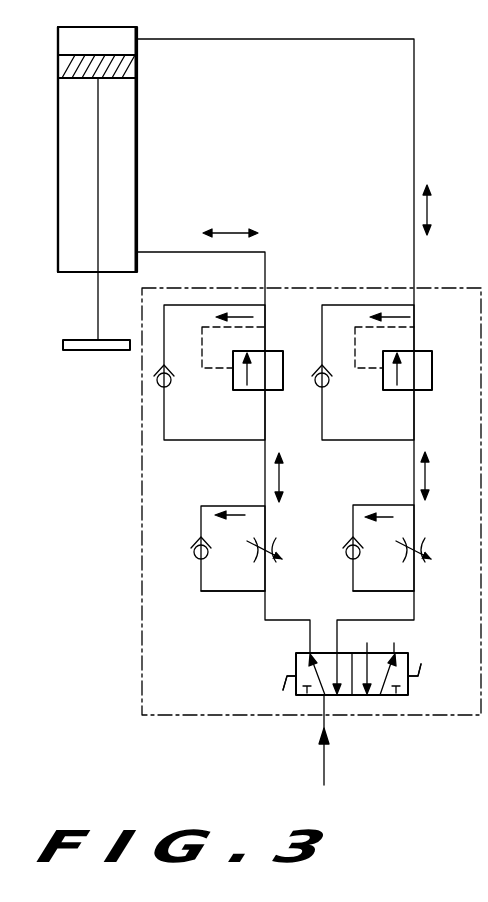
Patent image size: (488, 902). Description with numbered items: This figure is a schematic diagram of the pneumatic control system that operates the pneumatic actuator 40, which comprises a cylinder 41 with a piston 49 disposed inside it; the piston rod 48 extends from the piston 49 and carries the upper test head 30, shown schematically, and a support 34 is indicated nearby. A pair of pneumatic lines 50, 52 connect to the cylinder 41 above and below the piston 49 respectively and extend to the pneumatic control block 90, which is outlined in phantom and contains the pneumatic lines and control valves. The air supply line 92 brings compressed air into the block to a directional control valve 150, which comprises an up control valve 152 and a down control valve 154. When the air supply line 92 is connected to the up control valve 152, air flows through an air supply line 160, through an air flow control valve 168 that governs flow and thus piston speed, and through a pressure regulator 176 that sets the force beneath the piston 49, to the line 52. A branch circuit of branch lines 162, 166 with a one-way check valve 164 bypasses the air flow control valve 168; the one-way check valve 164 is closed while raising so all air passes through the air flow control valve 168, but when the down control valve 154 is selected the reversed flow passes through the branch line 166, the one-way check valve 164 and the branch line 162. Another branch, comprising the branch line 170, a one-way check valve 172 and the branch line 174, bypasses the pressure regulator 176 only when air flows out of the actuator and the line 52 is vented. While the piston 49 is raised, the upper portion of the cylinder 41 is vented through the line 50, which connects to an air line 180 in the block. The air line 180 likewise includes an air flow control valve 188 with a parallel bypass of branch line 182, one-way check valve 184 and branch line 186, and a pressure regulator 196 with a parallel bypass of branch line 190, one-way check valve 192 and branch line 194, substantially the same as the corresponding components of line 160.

The upper test head 30 is at (80, 340).
The support 34 is at (393, 895).
The pneumatic actuator 40 is at (140, 163).
The cylinder 41 is at (58, 213).
The piston rod 48 is at (96, 304).
The piston 49 is at (137, 72).
The pneumatic line 50 is at (243, 40).
The pneumatic line 52 is at (183, 252).
The pneumatic control block 90 is at (140, 536).
The air supply line 92 is at (325, 772).
The directional control valve 150 is at (294, 672).
The up control valve 152 is at (290, 688).
The down control valve 154 is at (421, 663).
The air supply line 160 is at (268, 622).
The branch line 162 is at (211, 594).
The one-way check valve 164 is at (197, 543).
The branch line 166 is at (250, 506).
The air flow control valve 168 is at (272, 560).
The branch line 170 is at (222, 441).
The one-way check valve 172 is at (186, 385).
The branch line 174 is at (213, 316).
The pressure regulator 176 is at (248, 392).
The air supply line 180 is at (372, 622).
The branch line 182 is at (360, 594).
The one-way check valve 184 is at (349, 543).
The branch line 186 is at (397, 505).
The air flow control valve 188 is at (421, 560).
The branch line 190 is at (374, 441).
The one-way check valve 192 is at (344, 385).
The branch line 194 is at (369, 316).
The pressure regulator 196 is at (397, 392).